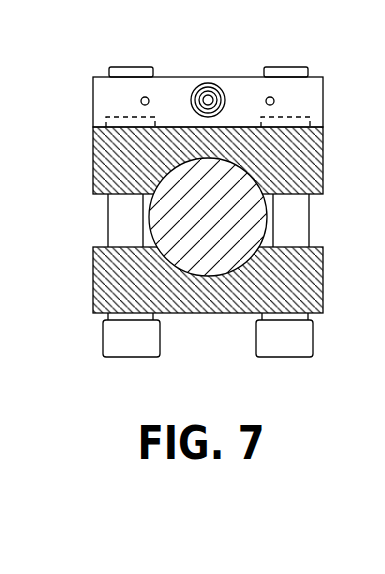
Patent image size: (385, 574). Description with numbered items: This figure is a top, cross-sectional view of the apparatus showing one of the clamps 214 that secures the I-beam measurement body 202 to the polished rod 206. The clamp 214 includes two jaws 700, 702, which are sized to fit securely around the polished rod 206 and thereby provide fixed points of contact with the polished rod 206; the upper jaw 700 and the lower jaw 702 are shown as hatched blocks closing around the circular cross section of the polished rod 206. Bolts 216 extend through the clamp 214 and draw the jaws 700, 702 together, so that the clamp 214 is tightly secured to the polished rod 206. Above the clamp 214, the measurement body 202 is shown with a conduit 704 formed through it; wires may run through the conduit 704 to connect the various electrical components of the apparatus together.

The jaw 700 is at (200, 242).
The jaw 702 is at (93, 281).
The conduit 704 is at (170, 86).
The I-beam measurement body 202 is at (254, 87).
The clamp 214 is at (305, 161).
The bolt 216 is at (283, 198).
The polished rod 206 is at (165, 200).